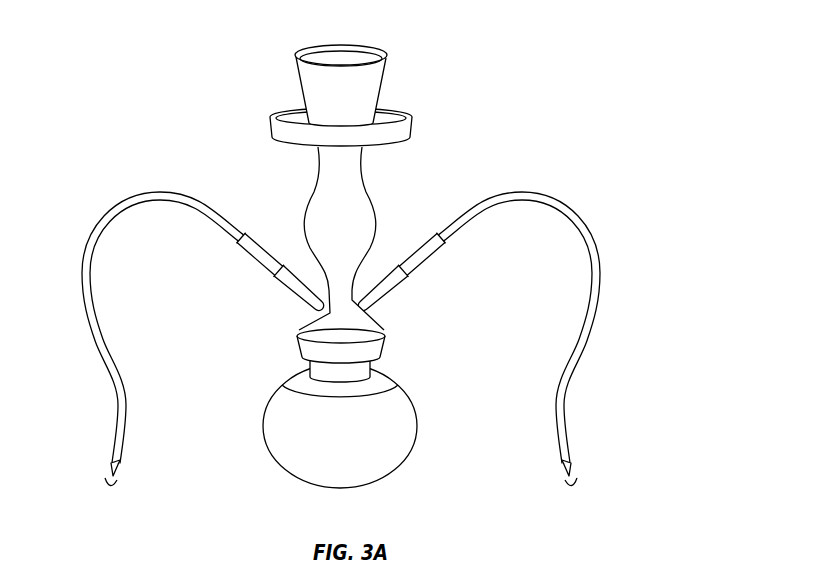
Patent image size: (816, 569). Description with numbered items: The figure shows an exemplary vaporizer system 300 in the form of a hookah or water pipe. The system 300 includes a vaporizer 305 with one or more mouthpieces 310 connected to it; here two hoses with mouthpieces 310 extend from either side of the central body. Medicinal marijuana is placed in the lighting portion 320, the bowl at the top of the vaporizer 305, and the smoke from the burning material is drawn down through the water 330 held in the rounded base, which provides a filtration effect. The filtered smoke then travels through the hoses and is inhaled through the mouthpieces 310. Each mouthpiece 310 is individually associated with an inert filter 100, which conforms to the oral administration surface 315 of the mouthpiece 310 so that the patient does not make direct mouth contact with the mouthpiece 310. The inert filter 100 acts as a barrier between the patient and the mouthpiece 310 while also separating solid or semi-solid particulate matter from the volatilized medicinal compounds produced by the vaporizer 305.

The inert filter 100 is at (109, 486).
The system 300 is at (592, 71).
The vaporizer 305 is at (103, 197).
The mouthpiece 310 is at (128, 465).
The oral administration surface 315 is at (110, 472).
The lighting portion 320 is at (282, 102).
The water 330 is at (397, 445).